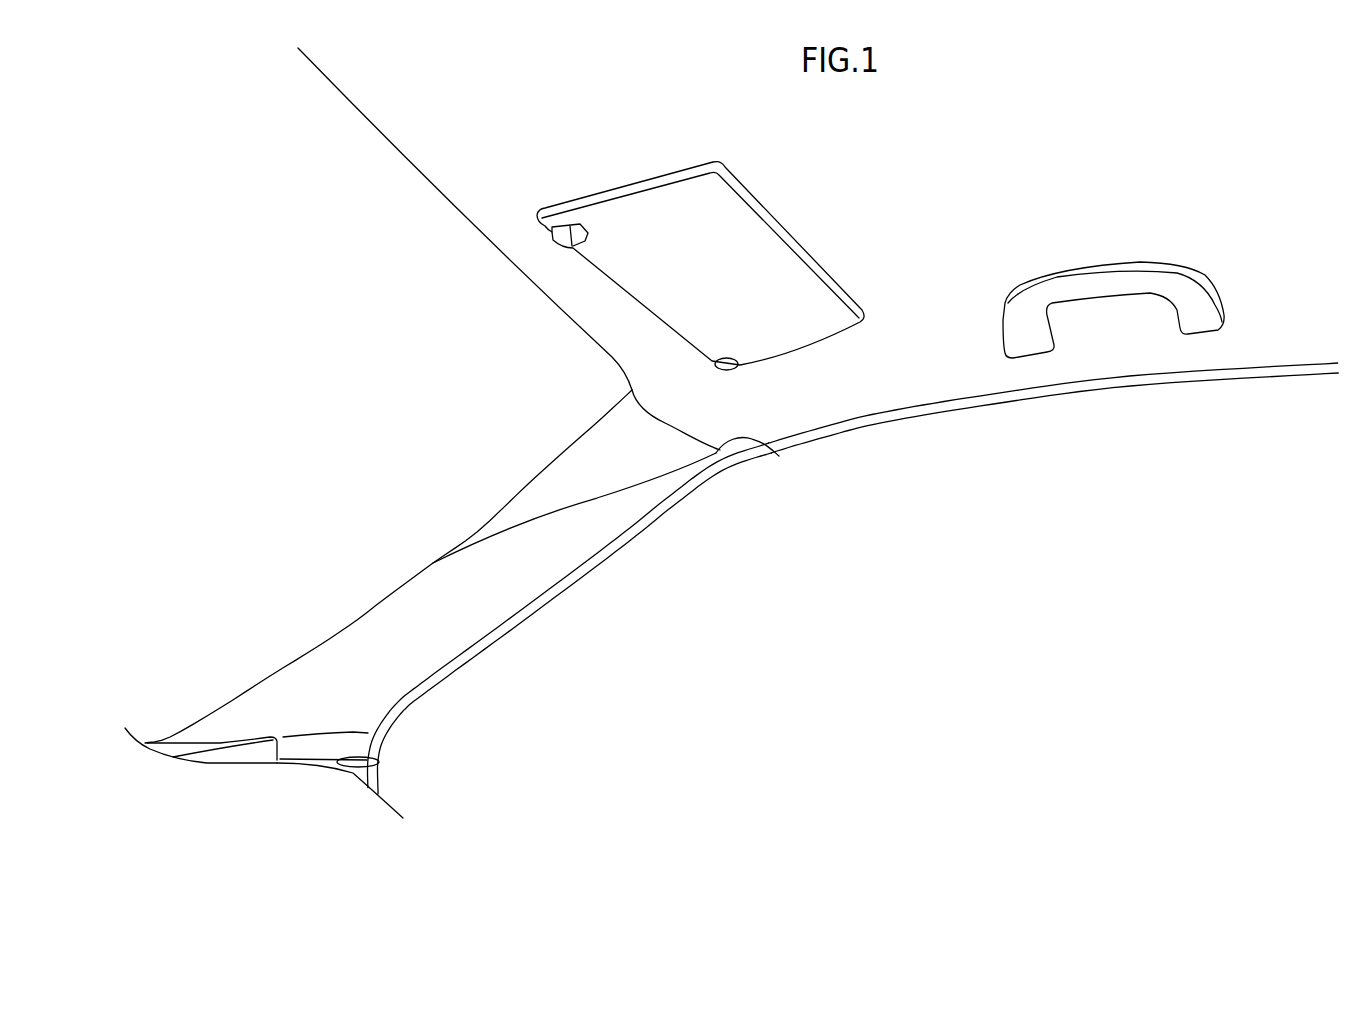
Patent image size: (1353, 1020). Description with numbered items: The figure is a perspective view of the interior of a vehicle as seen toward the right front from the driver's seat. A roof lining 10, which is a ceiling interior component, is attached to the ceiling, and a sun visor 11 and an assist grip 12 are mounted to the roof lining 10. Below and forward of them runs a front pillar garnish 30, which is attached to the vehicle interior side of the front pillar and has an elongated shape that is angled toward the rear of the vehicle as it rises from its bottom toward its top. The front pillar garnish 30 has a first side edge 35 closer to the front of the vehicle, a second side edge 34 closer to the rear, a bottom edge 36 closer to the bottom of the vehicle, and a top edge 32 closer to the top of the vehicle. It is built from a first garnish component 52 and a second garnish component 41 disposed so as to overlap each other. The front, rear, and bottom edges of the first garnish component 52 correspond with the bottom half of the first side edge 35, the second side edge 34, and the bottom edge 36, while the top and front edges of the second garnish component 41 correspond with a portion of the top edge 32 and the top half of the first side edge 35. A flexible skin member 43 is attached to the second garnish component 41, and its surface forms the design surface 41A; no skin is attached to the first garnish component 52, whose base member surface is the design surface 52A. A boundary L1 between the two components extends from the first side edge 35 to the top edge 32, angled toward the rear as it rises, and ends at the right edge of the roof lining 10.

The roof lining 10 is at (1257, 328).
The sun visor 11 is at (810, 323).
The assist grip 12 is at (1107, 288).
The front pillar garnish 30 is at (332, 618).
The top edge 32 is at (770, 450).
The second side edge 34 is at (575, 585).
The first side edge 35 is at (527, 485).
The lower end portion 36 is at (379, 762).
The second garnish component 41 is at (477, 532).
The design surface 41A is at (575, 474).
The skin member 43 is at (618, 432).
The first garnish component 52 is at (417, 587).
The design surface 52A is at (470, 628).
The boundary L1 is at (645, 480).